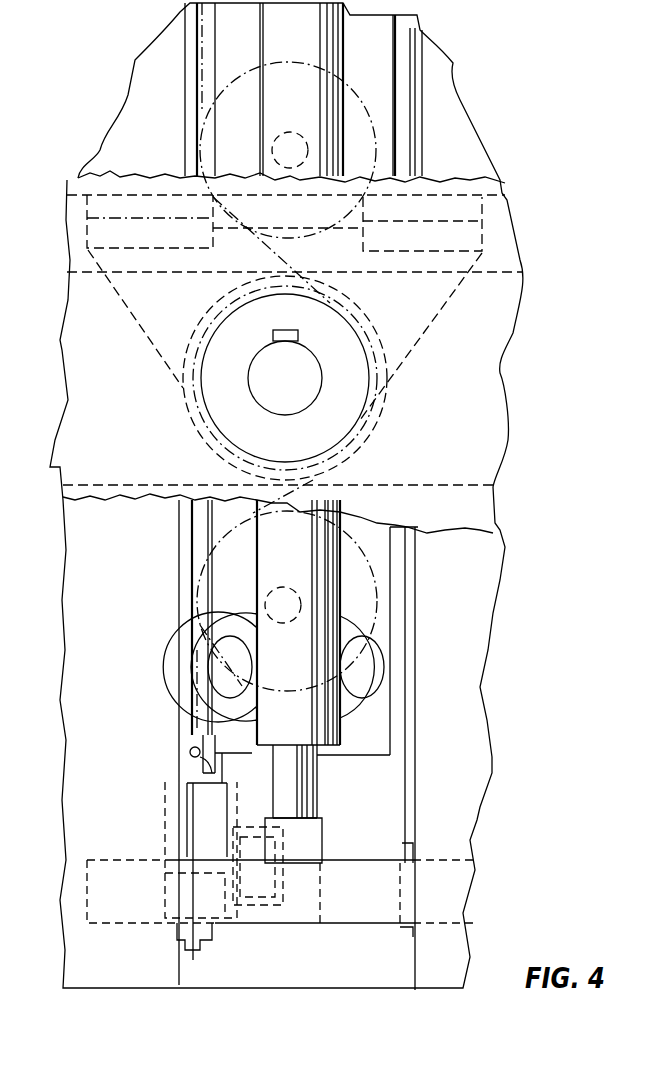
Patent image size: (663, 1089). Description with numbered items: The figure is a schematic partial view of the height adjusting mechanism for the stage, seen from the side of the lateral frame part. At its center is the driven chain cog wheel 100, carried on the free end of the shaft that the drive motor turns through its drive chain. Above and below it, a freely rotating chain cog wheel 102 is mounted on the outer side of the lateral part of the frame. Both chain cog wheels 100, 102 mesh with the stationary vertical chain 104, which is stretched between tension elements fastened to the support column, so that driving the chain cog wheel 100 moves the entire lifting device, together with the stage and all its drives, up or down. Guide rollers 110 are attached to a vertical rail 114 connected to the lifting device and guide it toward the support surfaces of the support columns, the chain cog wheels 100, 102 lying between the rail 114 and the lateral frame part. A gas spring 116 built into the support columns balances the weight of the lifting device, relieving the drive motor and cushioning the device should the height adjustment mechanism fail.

The chain cog wheel 100 is at (200, 372).
The chain cog wheel 102 is at (373, 137).
The stationary vertical chain 104 is at (310, 258).
The guide roller 110 is at (393, 707).
The vertical rail 114 is at (390, 578).
The gas spring 116 is at (333, 745).